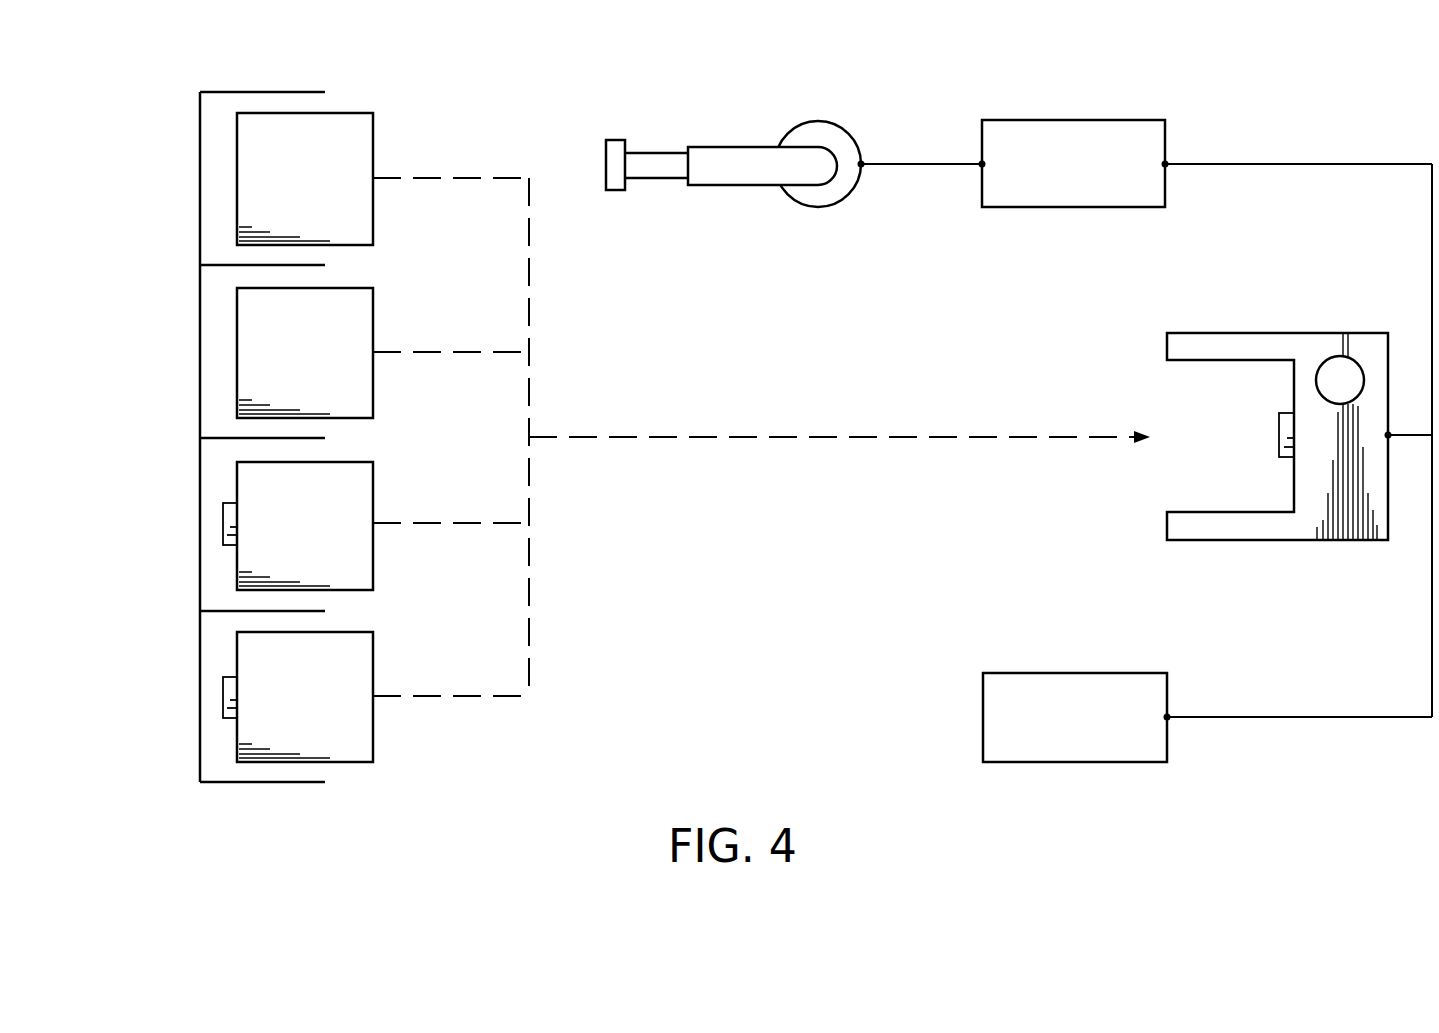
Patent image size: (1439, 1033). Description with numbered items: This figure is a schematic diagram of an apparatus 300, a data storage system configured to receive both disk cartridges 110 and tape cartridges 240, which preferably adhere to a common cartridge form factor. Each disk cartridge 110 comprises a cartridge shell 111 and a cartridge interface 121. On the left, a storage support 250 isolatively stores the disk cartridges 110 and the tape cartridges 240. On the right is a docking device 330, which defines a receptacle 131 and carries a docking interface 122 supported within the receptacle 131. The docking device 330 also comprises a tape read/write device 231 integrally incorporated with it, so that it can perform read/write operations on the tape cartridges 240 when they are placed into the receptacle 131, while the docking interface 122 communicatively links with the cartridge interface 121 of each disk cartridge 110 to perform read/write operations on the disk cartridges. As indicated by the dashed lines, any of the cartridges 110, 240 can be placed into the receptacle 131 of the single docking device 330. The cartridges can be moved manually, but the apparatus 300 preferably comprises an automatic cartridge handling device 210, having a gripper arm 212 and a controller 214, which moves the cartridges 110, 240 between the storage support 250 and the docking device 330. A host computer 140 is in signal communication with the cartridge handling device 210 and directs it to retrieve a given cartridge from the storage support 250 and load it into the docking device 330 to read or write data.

The disk cartridge 110 is at (362, 455).
The cartridge shell 111 is at (352, 592).
The cartridge interface 121 is at (228, 548).
The docking interface 122 is at (1278, 433).
The receptacle 131 is at (1188, 396).
The host computer 140 is at (1048, 735).
The automatic cartridge handling device 210 is at (872, 192).
The gripper arm 212 is at (850, 134).
The controller 214 is at (1045, 180).
The tape read/write device 231 is at (1328, 358).
The tape cartridge 240 is at (280, 190).
The storage support 250 is at (200, 348).
The apparatus 300 is at (1292, 80).
The docking device 330 is at (1335, 552).